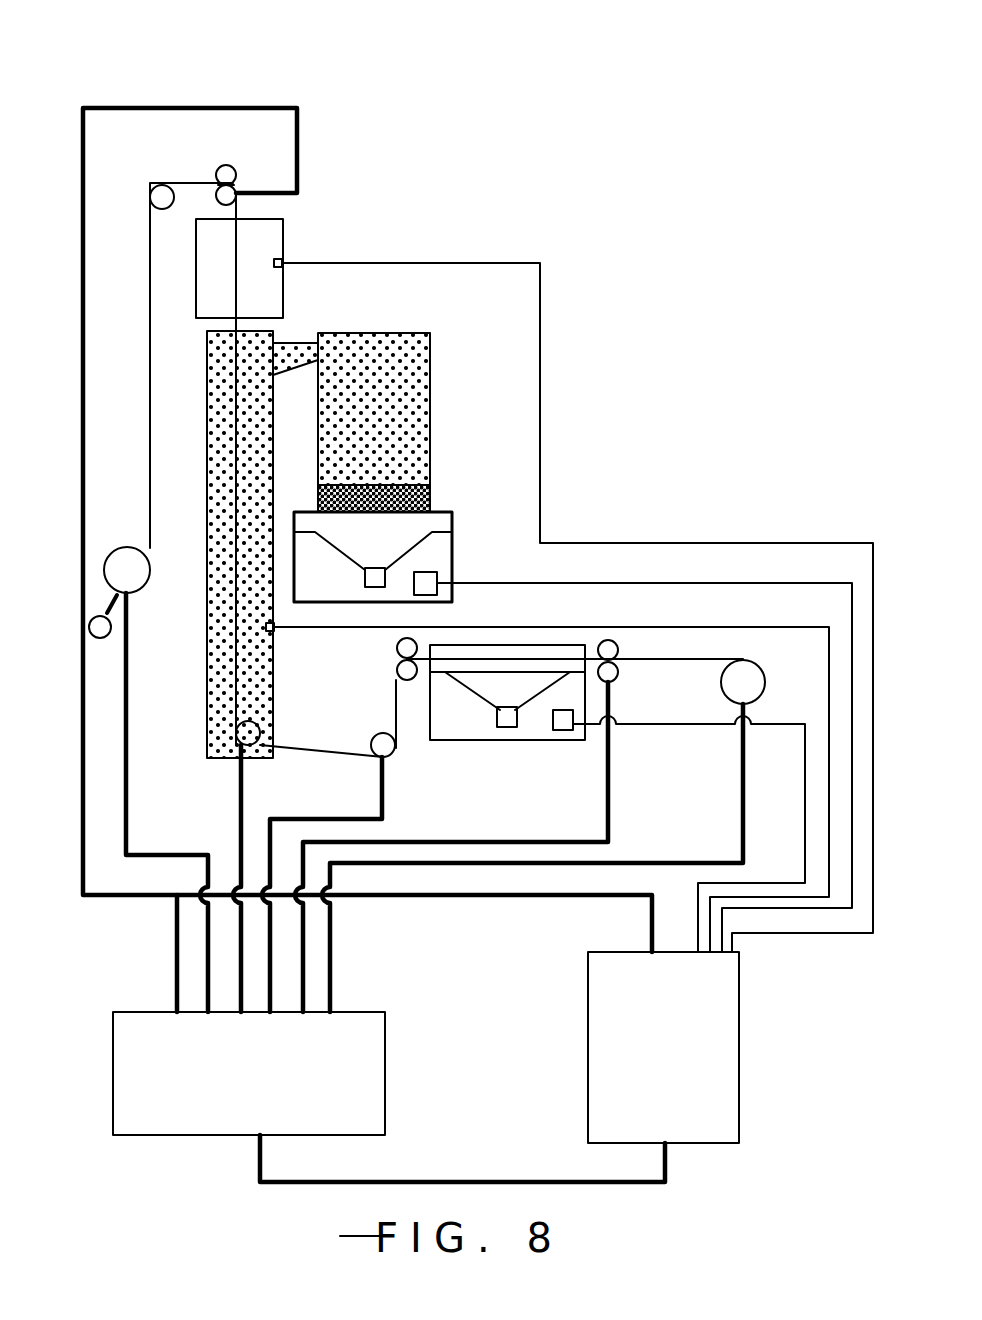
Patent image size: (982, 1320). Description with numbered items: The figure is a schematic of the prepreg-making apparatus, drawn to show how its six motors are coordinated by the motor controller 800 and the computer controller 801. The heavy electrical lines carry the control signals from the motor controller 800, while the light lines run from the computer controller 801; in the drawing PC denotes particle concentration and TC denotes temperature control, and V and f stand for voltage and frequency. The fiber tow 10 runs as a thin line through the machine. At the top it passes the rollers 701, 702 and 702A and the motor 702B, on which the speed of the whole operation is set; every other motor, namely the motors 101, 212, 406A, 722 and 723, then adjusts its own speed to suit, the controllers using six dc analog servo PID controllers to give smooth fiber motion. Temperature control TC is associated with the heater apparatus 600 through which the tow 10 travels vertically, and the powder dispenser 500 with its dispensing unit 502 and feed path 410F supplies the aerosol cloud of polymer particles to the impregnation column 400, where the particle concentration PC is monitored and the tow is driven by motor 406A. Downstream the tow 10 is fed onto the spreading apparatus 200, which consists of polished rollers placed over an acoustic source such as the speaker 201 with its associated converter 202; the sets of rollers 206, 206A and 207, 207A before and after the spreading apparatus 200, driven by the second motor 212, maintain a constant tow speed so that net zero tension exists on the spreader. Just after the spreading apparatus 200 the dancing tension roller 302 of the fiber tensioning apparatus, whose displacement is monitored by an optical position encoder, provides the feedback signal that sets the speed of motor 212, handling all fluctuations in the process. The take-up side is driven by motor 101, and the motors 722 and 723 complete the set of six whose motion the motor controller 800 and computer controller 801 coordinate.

The tow 10 is at (150, 355).
The motor 101 is at (755, 678).
The spreading apparatus 200 is at (495, 645).
The speaker 201 is at (493, 683).
The voltage-to-frequency converter 202 is at (563, 727).
The roller 206 is at (618, 642).
The roller 206A is at (657, 673).
The roller 207 is at (397, 650).
The roller 207A is at (397, 673).
The second motor 212 is at (622, 650).
The dancing tension roller 302 is at (388, 760).
The powder applicator column 400 is at (205, 598).
The motor 406A is at (248, 733).
The feed chute 410F is at (298, 342).
The powder dispenser 500 is at (432, 434).
The powder metering unit 502 is at (452, 534).
The heater unit 600 is at (290, 232).
The guide roller 701 is at (165, 184).
The drive roller 702 is at (227, 164).
The nip 702A is at (225, 192).
The motor 702B is at (242, 190).
The motor 722 is at (92, 632).
The motor 723 is at (100, 582).
The motor controller 800 is at (357, 1050).
The computer controller 801 is at (707, 1027).
The temperature control TC is at (278, 268).
The particle concentration PC is at (270, 632).